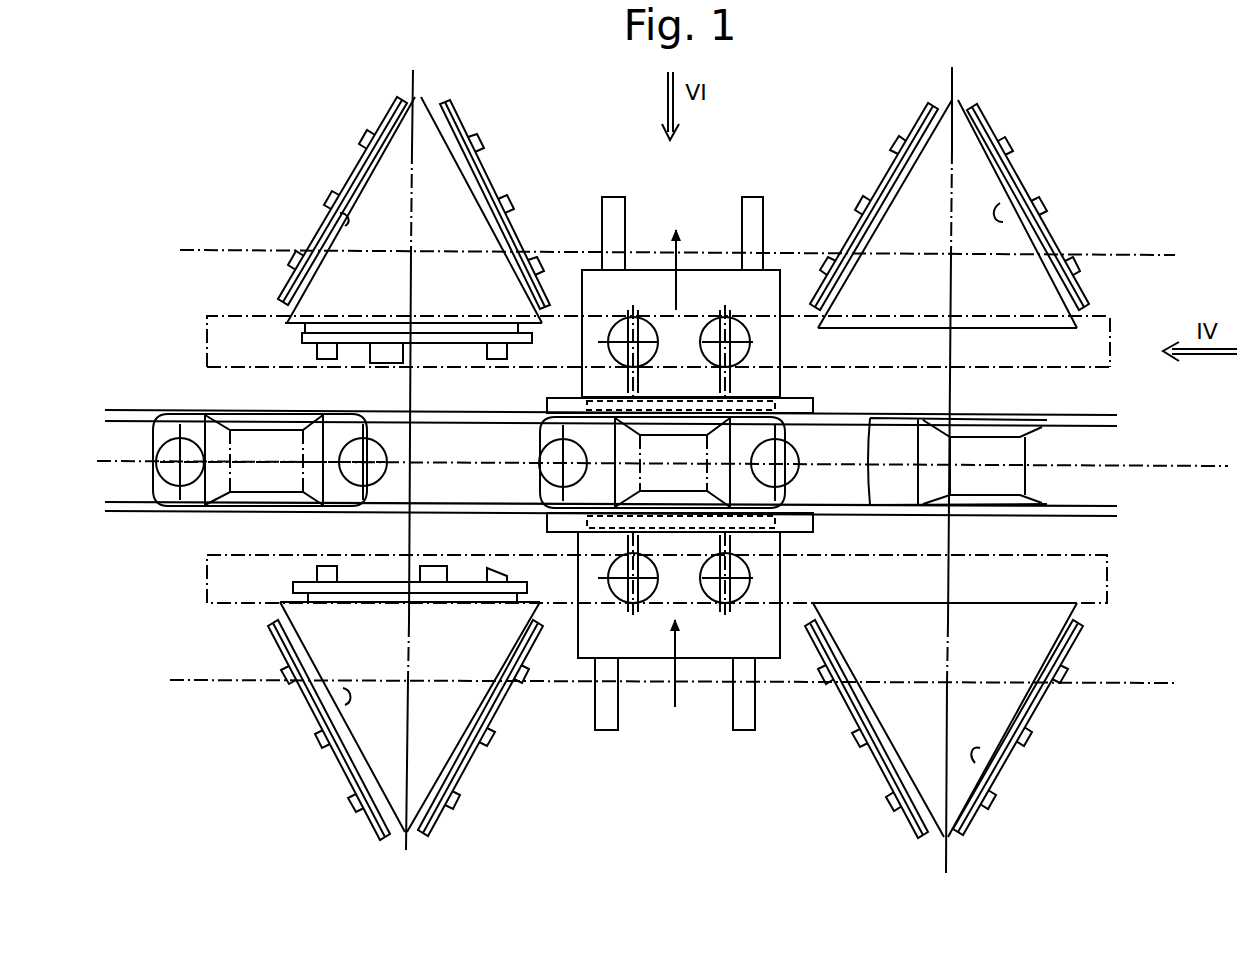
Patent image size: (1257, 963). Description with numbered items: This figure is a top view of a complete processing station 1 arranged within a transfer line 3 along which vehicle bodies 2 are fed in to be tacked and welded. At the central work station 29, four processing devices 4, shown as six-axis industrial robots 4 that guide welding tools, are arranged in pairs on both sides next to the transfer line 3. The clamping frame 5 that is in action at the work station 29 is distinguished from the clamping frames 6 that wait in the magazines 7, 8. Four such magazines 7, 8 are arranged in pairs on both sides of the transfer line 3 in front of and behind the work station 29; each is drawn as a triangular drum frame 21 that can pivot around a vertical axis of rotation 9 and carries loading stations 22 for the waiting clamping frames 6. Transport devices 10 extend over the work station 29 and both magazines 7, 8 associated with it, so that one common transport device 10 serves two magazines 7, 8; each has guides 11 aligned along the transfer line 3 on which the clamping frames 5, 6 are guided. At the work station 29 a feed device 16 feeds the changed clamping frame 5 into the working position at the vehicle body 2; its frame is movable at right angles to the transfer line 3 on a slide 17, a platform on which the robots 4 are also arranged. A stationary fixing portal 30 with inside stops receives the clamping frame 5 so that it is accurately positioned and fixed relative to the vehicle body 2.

The processing station 1 is at (755, 125).
The vehicle body 2 is at (257, 476).
The transfer line 3 is at (173, 585).
The processing device 4 is at (703, 317).
The clamping frame 5 is at (673, 397).
The clamping frame 6 is at (367, 147).
The magazine 7 is at (412, 118).
The magazine 8 is at (953, 102).
The vertical axis of rotation 9 is at (418, 254).
The transport device 10 is at (542, 375).
The guide 11 is at (230, 350).
The feed device 16 is at (728, 208).
The slide 17 is at (590, 282).
The drum frame 21 is at (340, 213).
The loading station 22 is at (463, 190).
The work station 29 is at (758, 393).
The fixing portal 30 is at (800, 388).